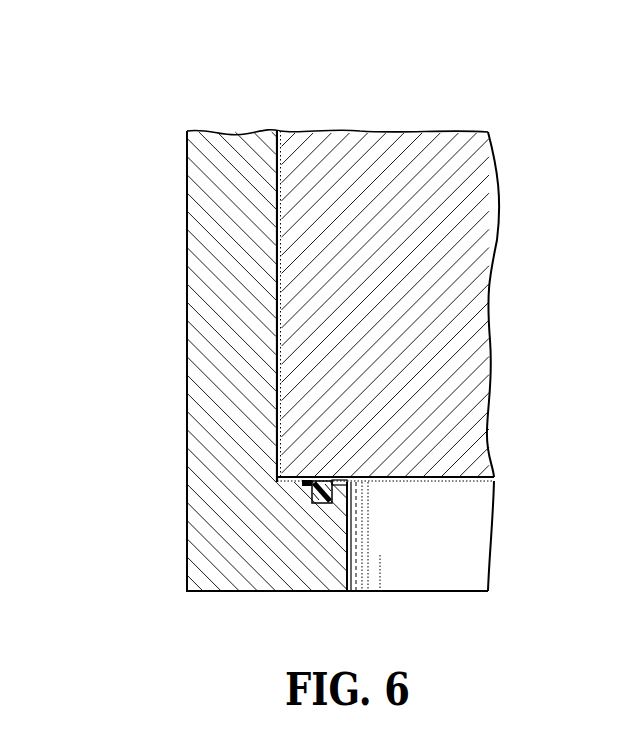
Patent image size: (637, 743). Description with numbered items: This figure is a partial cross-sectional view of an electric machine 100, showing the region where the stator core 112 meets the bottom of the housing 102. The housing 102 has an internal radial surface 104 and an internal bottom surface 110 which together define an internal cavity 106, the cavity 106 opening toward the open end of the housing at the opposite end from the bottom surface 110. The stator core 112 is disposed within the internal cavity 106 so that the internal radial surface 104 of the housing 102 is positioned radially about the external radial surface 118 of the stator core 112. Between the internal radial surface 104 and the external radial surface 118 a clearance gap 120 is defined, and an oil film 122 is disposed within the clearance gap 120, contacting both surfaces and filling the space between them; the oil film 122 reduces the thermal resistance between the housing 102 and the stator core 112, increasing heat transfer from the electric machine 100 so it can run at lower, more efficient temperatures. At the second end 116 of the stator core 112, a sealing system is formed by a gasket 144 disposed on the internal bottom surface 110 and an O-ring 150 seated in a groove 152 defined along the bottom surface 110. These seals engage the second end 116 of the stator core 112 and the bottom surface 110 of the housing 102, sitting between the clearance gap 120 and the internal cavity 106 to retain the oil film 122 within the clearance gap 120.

The electric machine 100 is at (188, 86).
The housing 102 is at (181, 562).
The internal radial surface 104 is at (276, 186).
The internal cavity 106 is at (440, 563).
The internal bottom surface 110 is at (337, 478).
The stator core 112 is at (431, 128).
The second end 116 is at (443, 473).
The external radial surface 118 is at (282, 344).
The clearance gap 120 is at (178, 304).
The oil film 122 is at (276, 290).
The gasket 144 is at (298, 484).
The O-ring 150 is at (316, 505).
The groove 152 is at (334, 503).